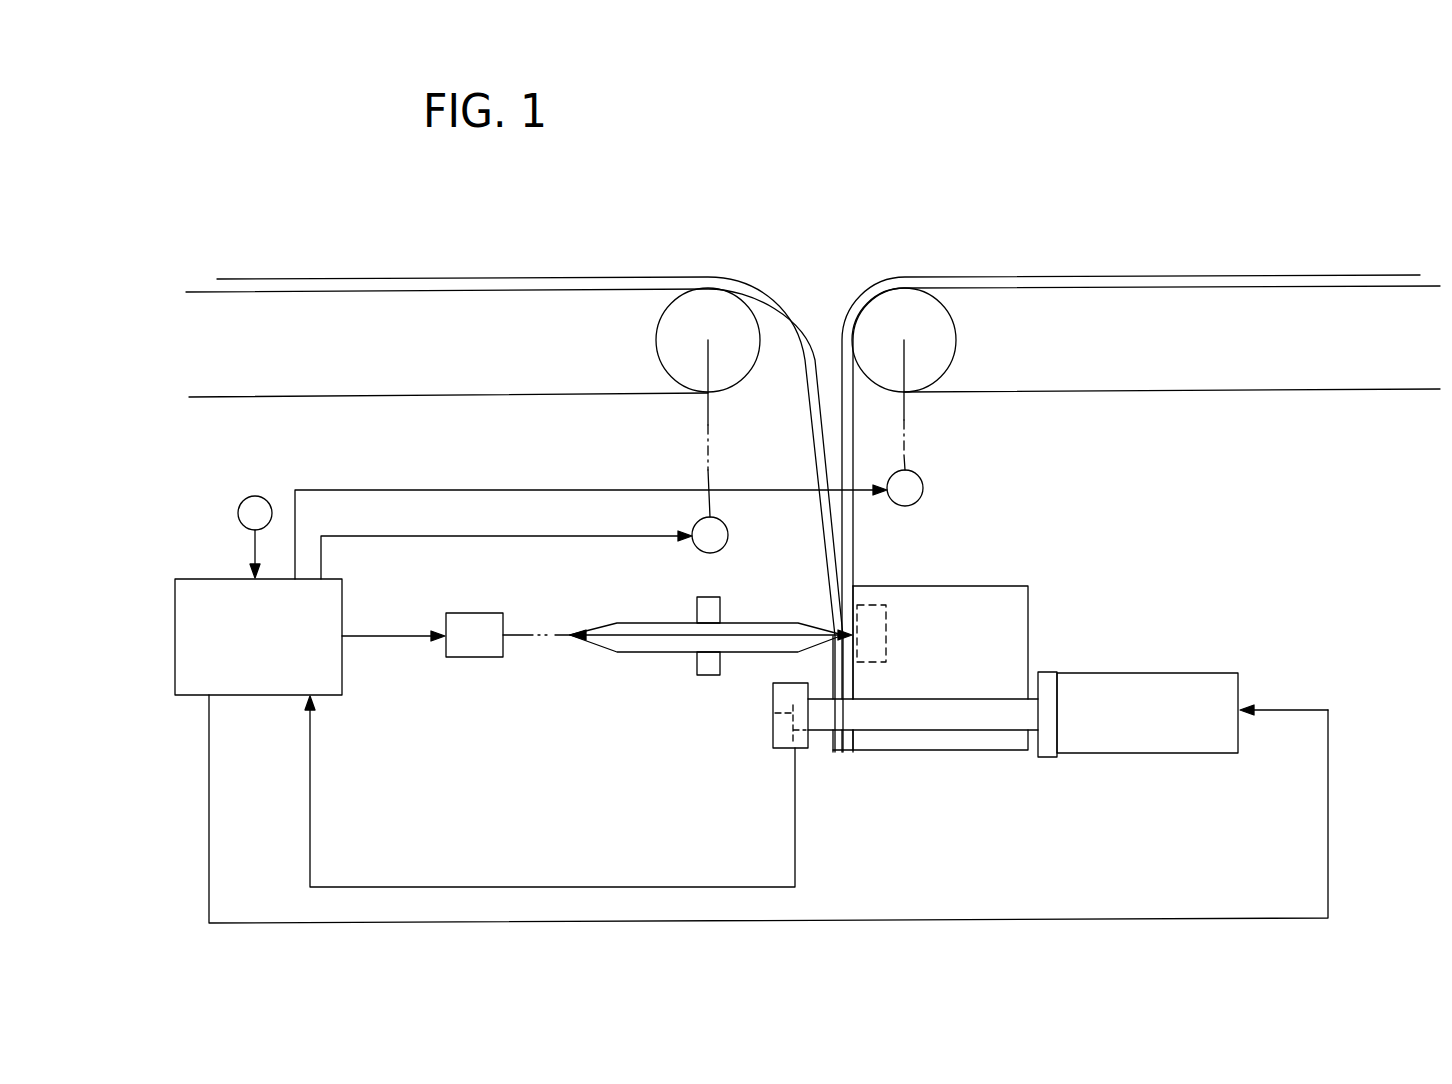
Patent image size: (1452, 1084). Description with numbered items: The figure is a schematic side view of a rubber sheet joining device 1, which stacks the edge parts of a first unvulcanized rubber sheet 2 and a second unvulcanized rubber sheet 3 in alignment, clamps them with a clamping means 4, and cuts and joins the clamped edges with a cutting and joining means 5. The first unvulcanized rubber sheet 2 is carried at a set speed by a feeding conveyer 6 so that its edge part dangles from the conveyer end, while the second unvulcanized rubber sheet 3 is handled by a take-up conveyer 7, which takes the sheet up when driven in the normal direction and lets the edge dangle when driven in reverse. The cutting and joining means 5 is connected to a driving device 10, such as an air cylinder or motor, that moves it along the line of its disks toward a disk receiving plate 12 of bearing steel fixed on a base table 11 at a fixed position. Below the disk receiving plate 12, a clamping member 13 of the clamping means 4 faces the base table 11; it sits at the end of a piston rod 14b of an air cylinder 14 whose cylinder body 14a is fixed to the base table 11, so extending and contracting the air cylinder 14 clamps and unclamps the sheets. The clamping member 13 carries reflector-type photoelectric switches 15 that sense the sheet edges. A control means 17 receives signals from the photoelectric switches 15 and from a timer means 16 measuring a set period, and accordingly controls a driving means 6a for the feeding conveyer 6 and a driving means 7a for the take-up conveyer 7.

The rubber sheet joining device 1 is at (730, 149).
The first unvulcanized rubber sheet 2 is at (647, 278).
The second unvulcanized rubber sheet 3 is at (1130, 275).
The clamping means 4 is at (995, 775).
The cutting and joining means 5 is at (630, 665).
The feeding conveyer 6 is at (363, 397).
The driving means for the feeding conveyer 6a is at (727, 546).
The take-up conveyer 7 is at (1100, 390).
The driving means for the take-up conveyer 7a is at (922, 480).
The driving device 10 is at (473, 657).
The base table 11 is at (965, 585).
The disk receiving plate 12 is at (882, 603).
The clamping member 13 is at (782, 750).
The air cylinder 14 is at (1032, 759).
The cylinder body 14a is at (1108, 755).
The piston rod 14b is at (917, 722).
The reflector-type photoelectric switch 15 is at (771, 713).
The timer means 16 is at (255, 495).
The control means 17 is at (276, 654).